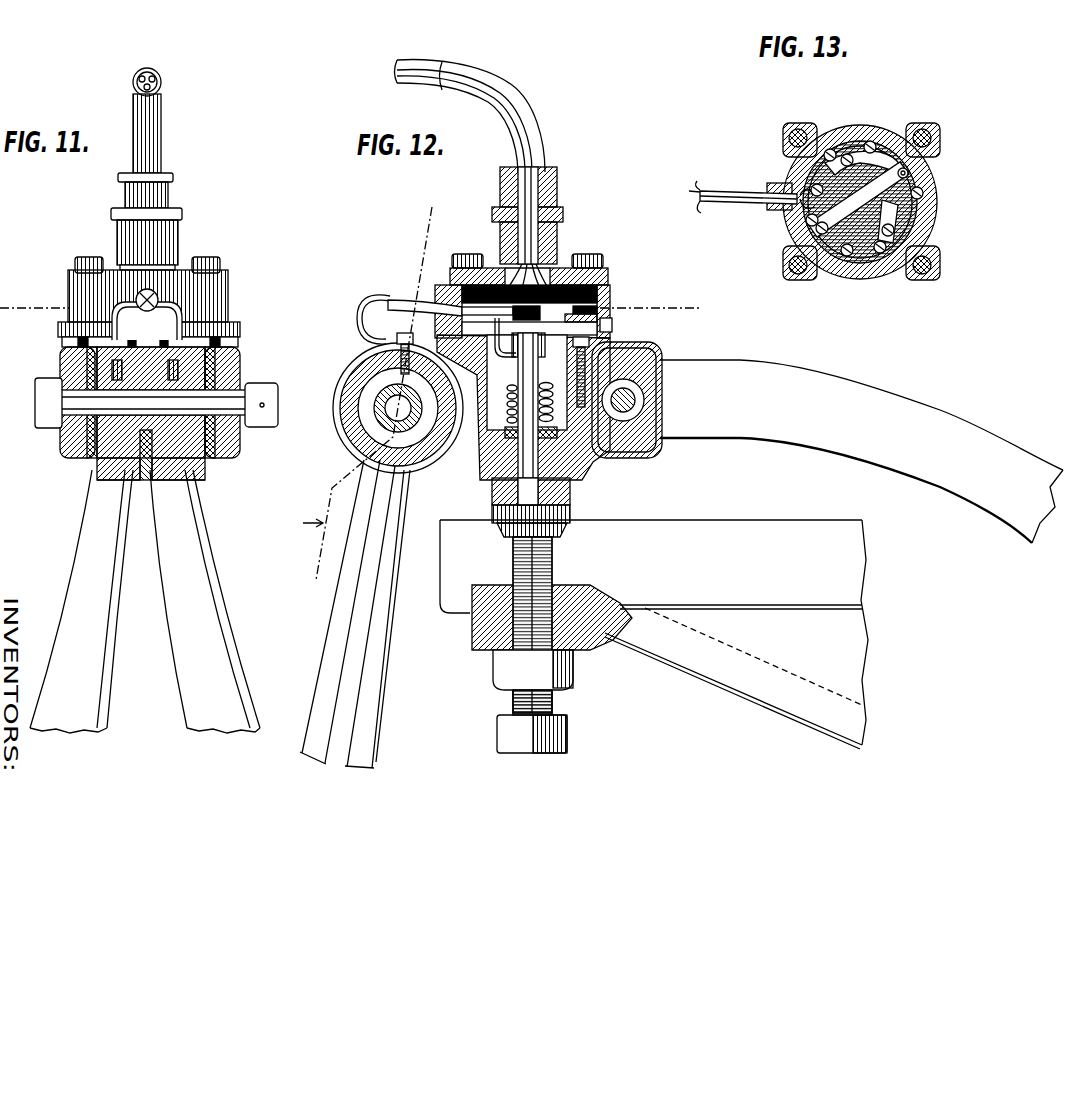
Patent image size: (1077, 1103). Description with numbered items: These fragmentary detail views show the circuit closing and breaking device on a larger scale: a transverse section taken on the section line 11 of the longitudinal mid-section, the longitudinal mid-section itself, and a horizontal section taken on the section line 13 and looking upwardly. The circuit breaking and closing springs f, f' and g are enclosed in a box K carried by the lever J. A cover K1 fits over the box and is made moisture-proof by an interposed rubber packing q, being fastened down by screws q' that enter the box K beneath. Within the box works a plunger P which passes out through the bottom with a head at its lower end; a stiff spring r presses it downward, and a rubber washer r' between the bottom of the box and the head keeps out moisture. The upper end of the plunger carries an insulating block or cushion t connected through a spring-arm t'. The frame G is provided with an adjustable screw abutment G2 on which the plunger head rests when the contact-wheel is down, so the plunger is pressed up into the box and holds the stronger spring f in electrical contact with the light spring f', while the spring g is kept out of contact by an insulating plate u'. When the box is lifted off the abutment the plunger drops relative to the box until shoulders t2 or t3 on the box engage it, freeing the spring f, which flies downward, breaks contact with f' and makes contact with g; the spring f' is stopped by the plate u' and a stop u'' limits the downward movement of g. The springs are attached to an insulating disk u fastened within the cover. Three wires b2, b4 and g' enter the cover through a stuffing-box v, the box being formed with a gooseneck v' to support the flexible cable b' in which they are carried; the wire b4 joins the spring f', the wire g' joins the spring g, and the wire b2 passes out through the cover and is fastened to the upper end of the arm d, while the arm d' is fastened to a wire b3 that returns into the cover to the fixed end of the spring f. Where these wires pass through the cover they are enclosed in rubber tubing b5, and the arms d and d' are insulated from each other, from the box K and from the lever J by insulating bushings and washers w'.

In FIG. 11, the gooseneck v' is at (158, 120).
In FIG. 12, the gooseneck v' is at (471, 116).
In FIG. 11, the stuffing-box v is at (149, 221).
In FIG. 12, the stuffing-box v is at (524, 215).
In FIG. 11, the screws q' is at (147, 253).
In FIG. 12, the screws q' is at (528, 247).
In FIG. 13, the screws q' is at (861, 221).
In FIG. 11, the cover K1 is at (230, 290).
In FIG. 12, the cover K1 is at (609, 273).
In FIG. 11, the box K is at (160, 334).
In FIG. 12, the box K is at (594, 459).
In FIG. 13, the box K is at (861, 186).
In FIG. 11, the wire b2 is at (149, 312).
In FIG. 12, the wire b2 is at (392, 296).
In FIG. 13, the wire b2 is at (702, 190).
In FIG. 11, the wire b3 is at (131, 302).
In FIG. 12, the wire b3 is at (357, 325).
In FIG. 13, the wire b3 is at (708, 212).
In FIG. 11, the lever J is at (242, 441).
In FIG. 12, the lever J is at (861, 451).
In FIG. 11, the insulating bushings and washers w' is at (146, 473).
In FIG. 12, the insulating bushings and washers w' is at (386, 408).
In FIG. 11, the arm d' is at (81, 601).
In FIG. 12, the arm d' is at (358, 614).
In FIG. 11, the arm d is at (205, 601).
In FIG. 12, the cable b' is at (405, 82).
In FIG. 12, the section line 11 is at (373, 387).
In FIG. 12, the insulating disk u is at (543, 293).
In FIG. 13, the insulating disk u is at (938, 226).
In FIG. 12, the spring f' is at (650, 298).
In FIG. 13, the spring f' is at (858, 199).
In FIG. 12, the insulating plate u' is at (618, 319).
In FIG. 13, the insulating plate u' is at (941, 158).
In FIG. 12, the stop u'' is at (604, 325).
In FIG. 12, the packing q is at (623, 333).
In FIG. 12, the spring f is at (487, 318).
In FIG. 13, the spring f is at (859, 203).
In FIG. 12, the insulating block t is at (534, 323).
In FIG. 12, the spring-arm t' is at (496, 337).
In FIG. 12, the spring g is at (573, 370).
In FIG. 13, the spring g is at (888, 249).
In FIG. 12, the shoulder t3 is at (548, 348).
In FIG. 12, the spring r is at (535, 403).
In FIG. 12, the shoulder t2 is at (559, 432).
In FIG. 12, the rubber washer r' is at (540, 507).
In FIG. 12, the plunger P is at (528, 419).
In FIG. 12, the abutment G2 is at (514, 562).
In FIG. 12, the frame G is at (654, 634).
In FIG. 13, the wire b4 is at (792, 167).
In FIG. 13, the rubber tubing b5 is at (753, 205).
In FIG. 13, the wire g' is at (854, 274).
In FIG. 12, the section line 13 is at (707, 303).